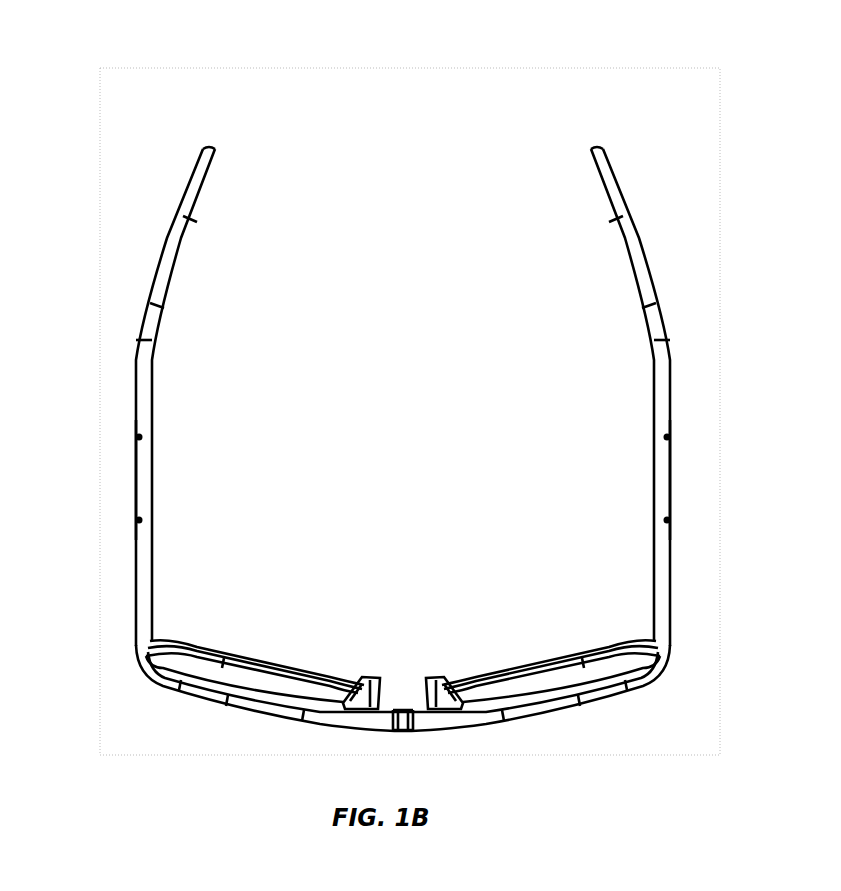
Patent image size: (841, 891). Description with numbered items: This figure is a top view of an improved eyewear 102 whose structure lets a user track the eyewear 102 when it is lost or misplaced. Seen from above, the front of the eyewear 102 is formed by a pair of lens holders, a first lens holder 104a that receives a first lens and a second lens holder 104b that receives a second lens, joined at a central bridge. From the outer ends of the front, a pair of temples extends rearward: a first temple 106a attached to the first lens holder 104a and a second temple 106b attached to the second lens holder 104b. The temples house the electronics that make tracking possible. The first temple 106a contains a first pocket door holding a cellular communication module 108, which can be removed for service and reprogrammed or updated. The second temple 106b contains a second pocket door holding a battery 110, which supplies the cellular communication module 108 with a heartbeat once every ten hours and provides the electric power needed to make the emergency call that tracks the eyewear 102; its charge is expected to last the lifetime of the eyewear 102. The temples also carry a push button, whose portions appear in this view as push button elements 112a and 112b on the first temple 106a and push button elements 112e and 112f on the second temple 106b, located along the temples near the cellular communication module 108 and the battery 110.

The eyewear 102 is at (138, 638).
The first lens holder 104a is at (542, 663).
The second lens holder 104b is at (270, 662).
The first temple 106a is at (640, 303).
The second temple 106b is at (140, 340).
The cellular communication module 108 is at (663, 472).
The battery 110 is at (137, 470).
The push button 112a is at (665, 432).
The push button 112b is at (665, 517).
The push button 112e is at (138, 432).
The push button 112f is at (138, 516).